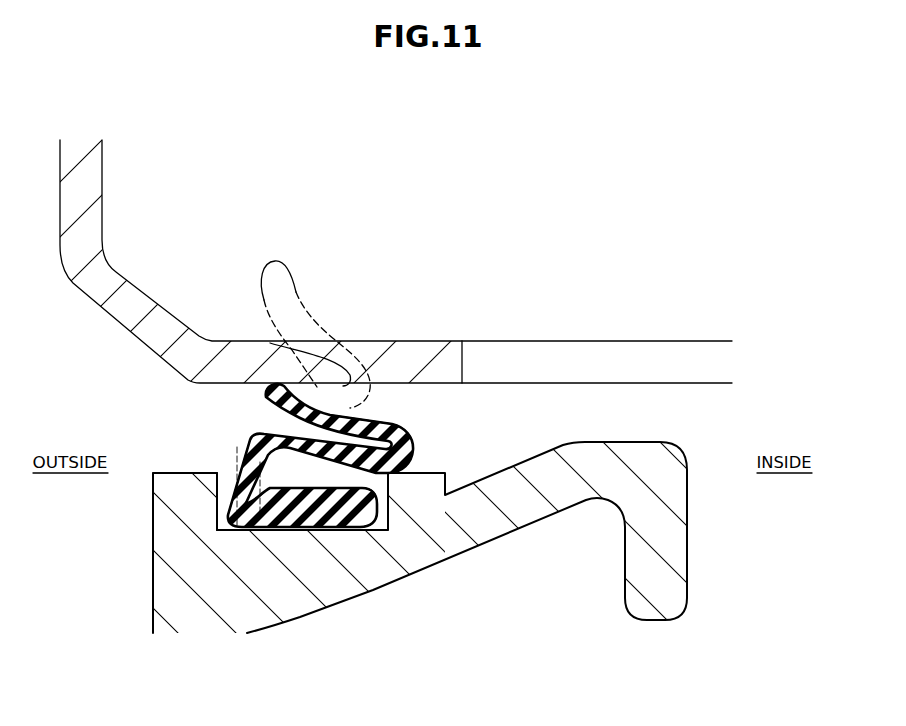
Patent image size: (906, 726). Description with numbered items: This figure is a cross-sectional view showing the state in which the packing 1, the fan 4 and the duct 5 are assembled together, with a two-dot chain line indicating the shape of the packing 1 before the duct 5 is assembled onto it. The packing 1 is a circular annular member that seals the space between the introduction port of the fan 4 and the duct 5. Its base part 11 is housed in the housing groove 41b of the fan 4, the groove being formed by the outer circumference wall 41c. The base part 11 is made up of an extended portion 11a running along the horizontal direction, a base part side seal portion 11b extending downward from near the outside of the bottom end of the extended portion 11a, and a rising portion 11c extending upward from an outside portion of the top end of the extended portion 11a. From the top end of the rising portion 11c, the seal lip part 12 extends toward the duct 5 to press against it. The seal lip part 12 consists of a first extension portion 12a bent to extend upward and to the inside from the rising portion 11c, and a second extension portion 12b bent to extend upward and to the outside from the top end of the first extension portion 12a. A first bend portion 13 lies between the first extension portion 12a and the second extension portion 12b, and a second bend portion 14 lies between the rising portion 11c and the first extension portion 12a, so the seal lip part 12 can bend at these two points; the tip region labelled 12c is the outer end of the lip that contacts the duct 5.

The packing 1 is at (298, 298).
The fan 4 is at (669, 440).
The duct 5 is at (507, 339).
The base part 11 is at (365, 483).
The extended portion 11a is at (318, 531).
The base part side seal portion 11b is at (272, 531).
The rising portion 11c is at (236, 459).
The seal lip part 12 is at (417, 431).
The first extension portion 12a is at (347, 531).
The second extension portion 12b is at (365, 416).
The seal lip tip 12c is at (282, 384).
The first bend portion 13 is at (415, 445).
The second bend portion 14 is at (247, 477).
The housing groove 41b is at (227, 525).
The outer circumference wall 41c is at (163, 527).